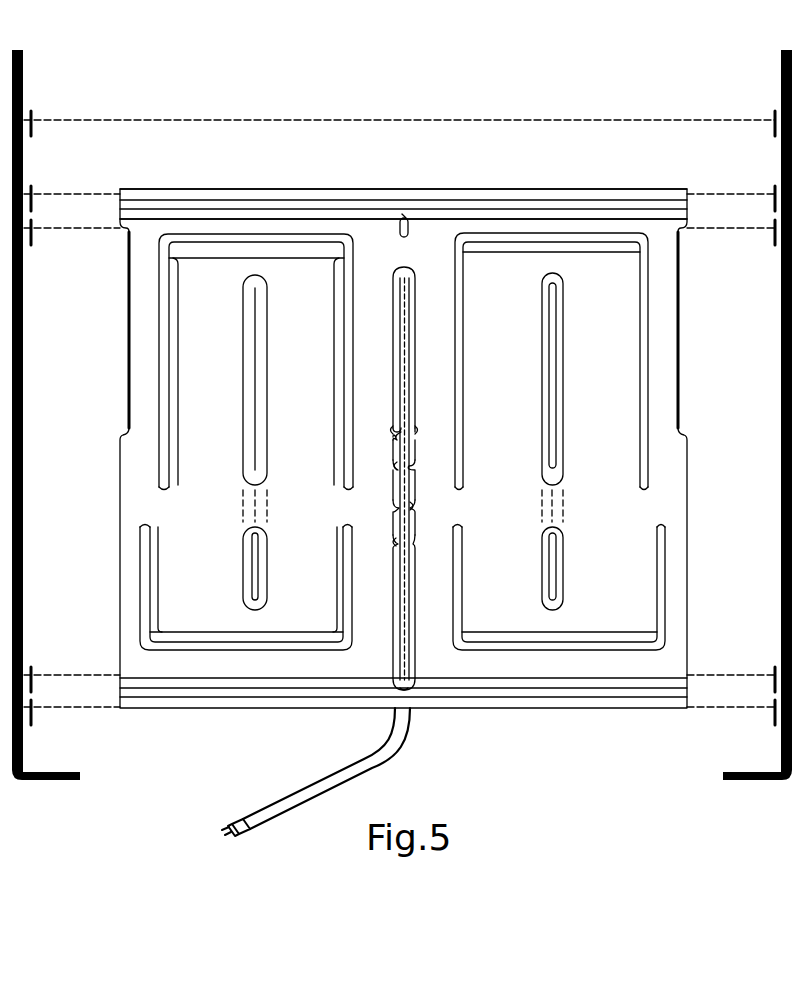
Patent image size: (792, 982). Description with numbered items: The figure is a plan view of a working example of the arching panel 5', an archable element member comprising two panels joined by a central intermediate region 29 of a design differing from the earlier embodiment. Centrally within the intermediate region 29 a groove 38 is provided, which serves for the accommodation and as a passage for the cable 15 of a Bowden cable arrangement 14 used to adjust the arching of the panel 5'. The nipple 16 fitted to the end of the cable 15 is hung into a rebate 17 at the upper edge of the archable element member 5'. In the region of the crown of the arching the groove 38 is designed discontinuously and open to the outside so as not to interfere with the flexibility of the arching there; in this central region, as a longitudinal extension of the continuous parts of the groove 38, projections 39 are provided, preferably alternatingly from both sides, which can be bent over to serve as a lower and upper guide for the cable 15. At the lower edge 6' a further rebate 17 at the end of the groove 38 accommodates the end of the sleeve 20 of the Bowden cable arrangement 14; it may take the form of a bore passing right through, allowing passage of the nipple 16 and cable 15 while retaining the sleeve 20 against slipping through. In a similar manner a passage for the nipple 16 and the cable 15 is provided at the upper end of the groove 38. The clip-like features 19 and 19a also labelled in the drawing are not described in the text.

The arching panel 5' is at (367, 448).
The lower edge 6' is at (403, 452).
The Bowden cable arrangement 14 is at (305, 797).
The cable 15 is at (410, 300).
The nipple 16 is at (401, 237).
The rebate 17 is at (399, 217).
The clip 19 is at (414, 431).
The clip tab 19a is at (393, 434).
The sleeve 20 is at (388, 764).
The central intermediate region 29 is at (382, 370).
The groove 38 is at (414, 380).
The projections 39 is at (395, 540).